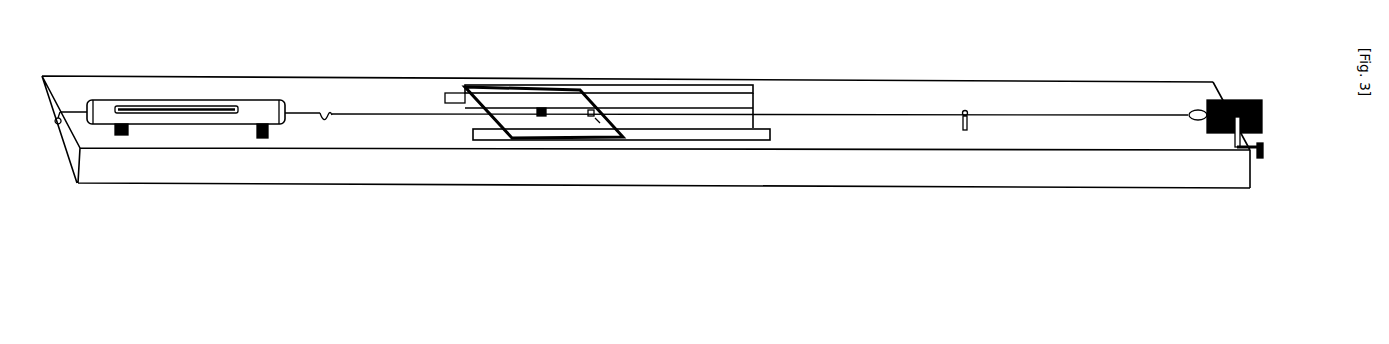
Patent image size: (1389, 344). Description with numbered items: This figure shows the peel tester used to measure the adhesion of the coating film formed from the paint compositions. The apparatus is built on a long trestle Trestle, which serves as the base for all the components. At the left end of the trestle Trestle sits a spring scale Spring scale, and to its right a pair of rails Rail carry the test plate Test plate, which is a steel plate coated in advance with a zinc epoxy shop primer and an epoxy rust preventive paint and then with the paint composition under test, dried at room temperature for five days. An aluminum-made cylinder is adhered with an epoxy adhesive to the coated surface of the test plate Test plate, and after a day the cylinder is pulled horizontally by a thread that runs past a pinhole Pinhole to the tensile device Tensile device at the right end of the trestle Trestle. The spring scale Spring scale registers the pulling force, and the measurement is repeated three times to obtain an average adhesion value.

The trestle Trestle is at (646, 144).
The spring scale Spring scale is at (186, 109).
The test plate Test plate is at (463, 108).
The rail Rail is at (753, 122).
The pinhole Pinhole is at (968, 110).
The tensile device Tensile device is at (1223, 100).